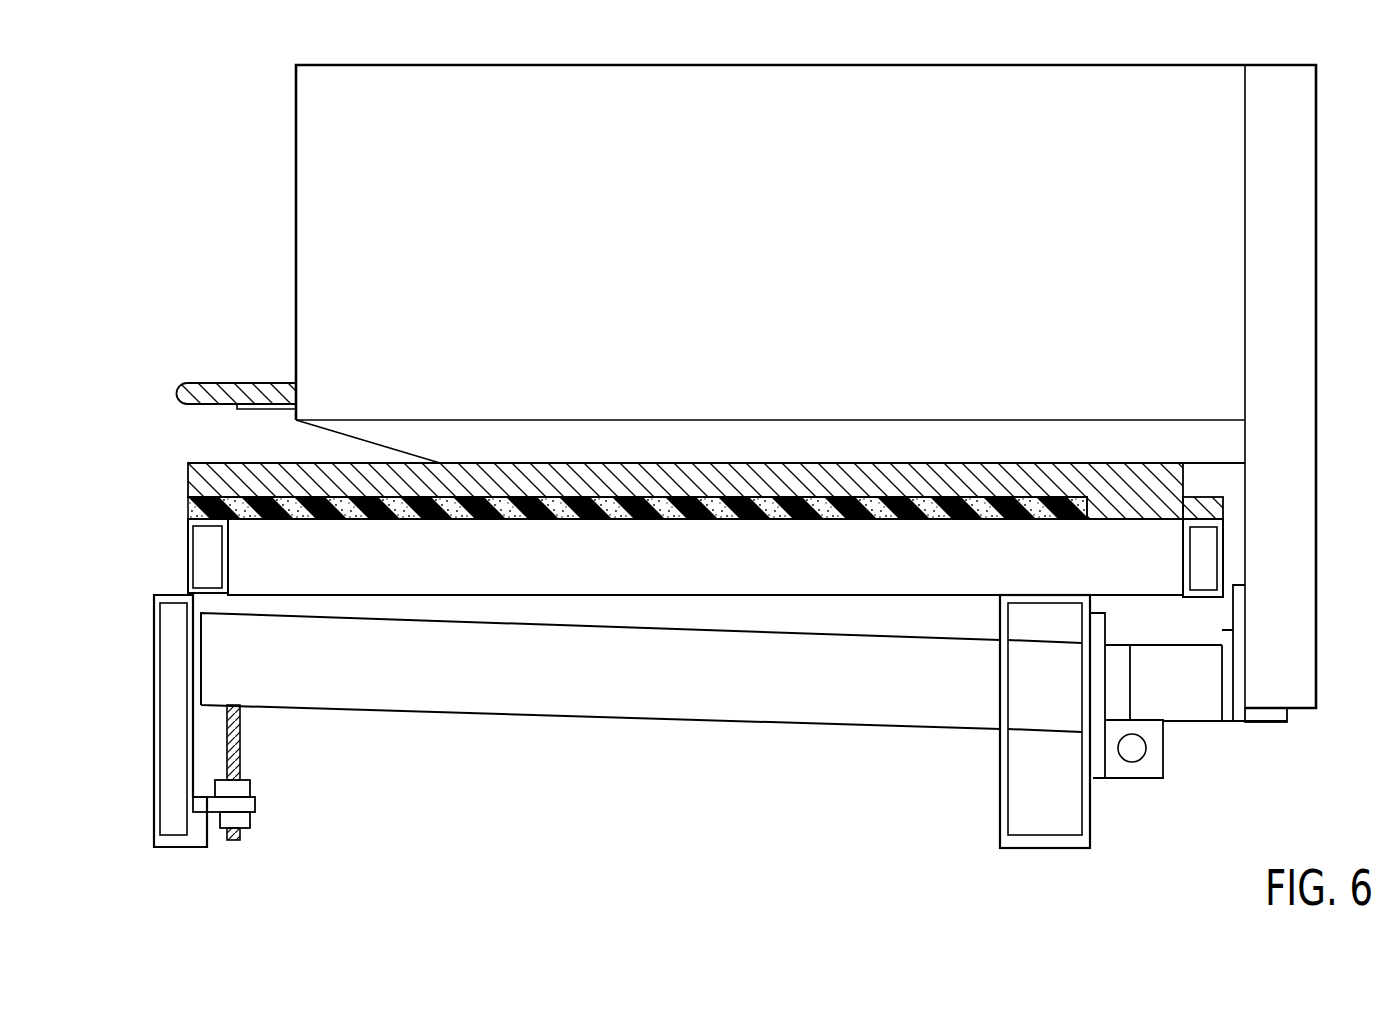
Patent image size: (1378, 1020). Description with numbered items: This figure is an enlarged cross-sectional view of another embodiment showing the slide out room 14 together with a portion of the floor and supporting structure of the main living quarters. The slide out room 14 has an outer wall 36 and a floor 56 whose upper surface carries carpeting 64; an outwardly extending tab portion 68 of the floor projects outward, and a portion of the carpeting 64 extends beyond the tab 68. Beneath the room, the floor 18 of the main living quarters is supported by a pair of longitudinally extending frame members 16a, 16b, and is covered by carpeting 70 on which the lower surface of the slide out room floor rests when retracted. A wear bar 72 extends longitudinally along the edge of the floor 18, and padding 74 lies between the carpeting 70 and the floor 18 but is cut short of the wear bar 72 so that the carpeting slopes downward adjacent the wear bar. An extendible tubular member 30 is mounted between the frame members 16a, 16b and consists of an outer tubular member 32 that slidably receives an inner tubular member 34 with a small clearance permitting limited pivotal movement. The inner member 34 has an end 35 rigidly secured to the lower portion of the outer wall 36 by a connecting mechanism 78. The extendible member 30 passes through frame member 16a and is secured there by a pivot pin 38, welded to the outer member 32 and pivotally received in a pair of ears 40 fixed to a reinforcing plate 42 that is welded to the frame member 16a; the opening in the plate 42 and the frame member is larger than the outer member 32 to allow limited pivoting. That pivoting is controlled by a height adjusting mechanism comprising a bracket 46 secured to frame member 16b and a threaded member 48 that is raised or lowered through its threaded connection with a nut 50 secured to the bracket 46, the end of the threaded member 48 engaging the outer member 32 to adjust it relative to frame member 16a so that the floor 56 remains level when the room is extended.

The slide out room 14 is at (817, 167).
The outer wall 36 is at (1300, 185).
The carpeting 64 is at (222, 392).
The tab portion 68 is at (238, 407).
The floor 56 is at (858, 457).
The padding 74 is at (883, 518).
The wear bar 72 is at (1199, 497).
The floor 18 is at (672, 566).
The carpeting 70 is at (197, 481).
The frame member 16b is at (173, 842).
The outer tubular member 32 is at (627, 706).
The threaded member 48 is at (232, 704).
The nut 50 is at (232, 793).
The bracket 46 is at (255, 811).
The extendible tubular member 30 is at (763, 752).
The frame member 16a is at (1011, 842).
The reinforcing plate 42 is at (1096, 773).
The inner tubular member 34 is at (1205, 707).
The pivot pin 38 is at (1133, 757).
The ears 40 is at (1155, 768).
The end 35 is at (1222, 670).
The connecting mechanism 78 is at (1234, 718).